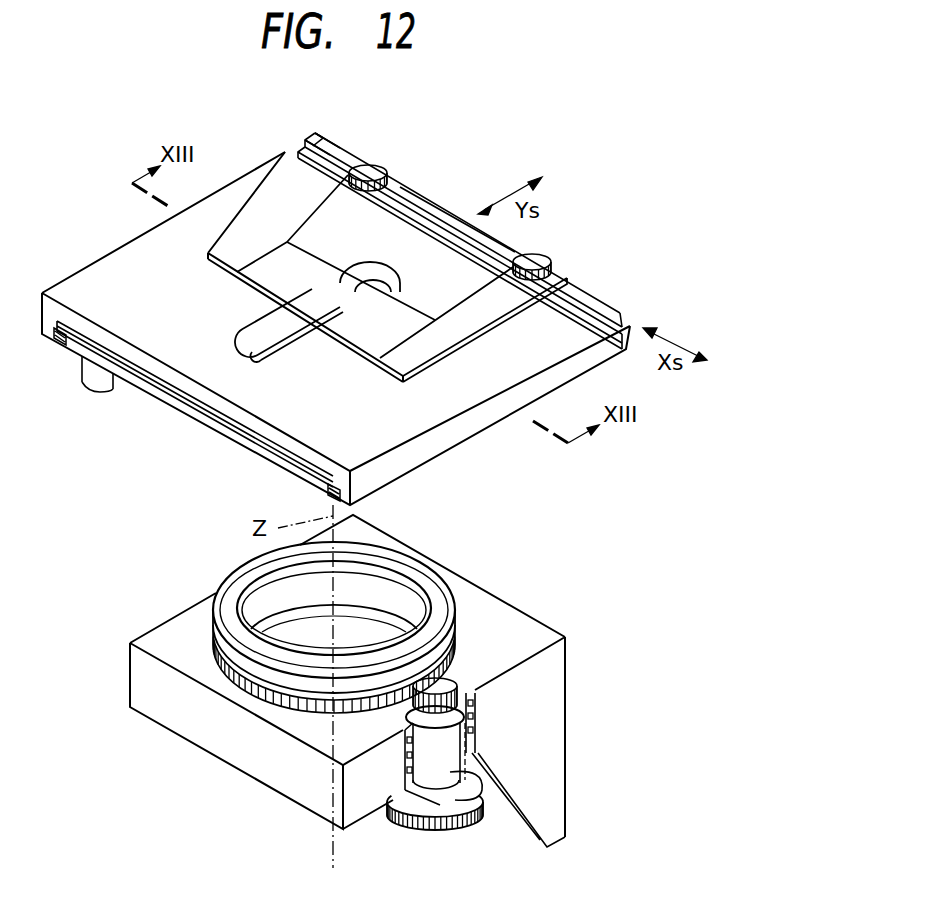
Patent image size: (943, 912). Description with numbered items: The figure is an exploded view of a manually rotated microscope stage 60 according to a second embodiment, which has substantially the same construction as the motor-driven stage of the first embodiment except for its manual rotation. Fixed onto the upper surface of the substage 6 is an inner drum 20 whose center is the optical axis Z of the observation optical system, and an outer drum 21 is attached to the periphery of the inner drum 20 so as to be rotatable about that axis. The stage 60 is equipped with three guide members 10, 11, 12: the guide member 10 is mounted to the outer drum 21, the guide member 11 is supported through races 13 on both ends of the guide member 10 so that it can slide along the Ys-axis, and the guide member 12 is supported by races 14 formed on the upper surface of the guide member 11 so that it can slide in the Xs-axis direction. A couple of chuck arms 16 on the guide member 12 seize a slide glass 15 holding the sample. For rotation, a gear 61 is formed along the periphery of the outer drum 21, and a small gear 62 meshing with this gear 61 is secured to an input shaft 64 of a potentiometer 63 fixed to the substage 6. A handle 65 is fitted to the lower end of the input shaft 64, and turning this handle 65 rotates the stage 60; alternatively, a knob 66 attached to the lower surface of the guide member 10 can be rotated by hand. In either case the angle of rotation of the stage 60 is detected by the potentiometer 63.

The substage 6 is at (233, 750).
The guide member 10 is at (113, 366).
The guide member 11 is at (72, 290).
The guide member 12 is at (583, 298).
The races 13 is at (55, 346).
The races 14 is at (340, 142).
The slide glass 15 is at (258, 272).
The chuck arms 16 is at (277, 226).
The inner drum 20 is at (397, 587).
The outer drum 21 is at (435, 585).
The stage 60 is at (436, 197).
The gear 61 is at (210, 634).
The small gear 62 is at (447, 685).
The potentiometer 63 is at (430, 752).
The input shaft 64 is at (478, 815).
The handle 65 is at (420, 831).
The knob 66 is at (90, 392).